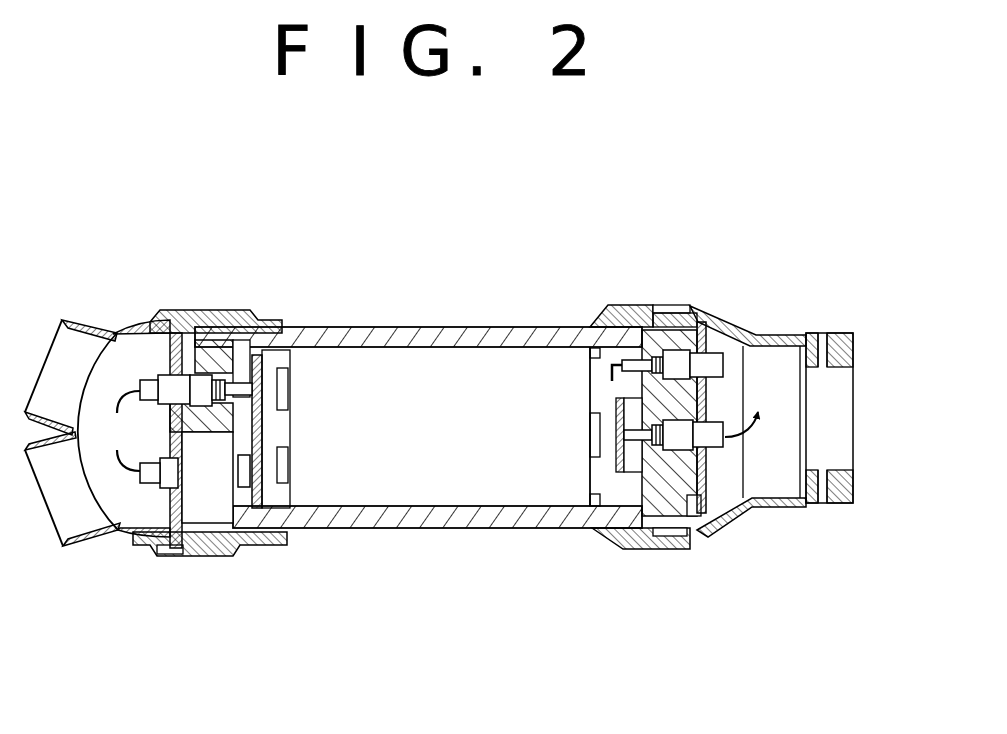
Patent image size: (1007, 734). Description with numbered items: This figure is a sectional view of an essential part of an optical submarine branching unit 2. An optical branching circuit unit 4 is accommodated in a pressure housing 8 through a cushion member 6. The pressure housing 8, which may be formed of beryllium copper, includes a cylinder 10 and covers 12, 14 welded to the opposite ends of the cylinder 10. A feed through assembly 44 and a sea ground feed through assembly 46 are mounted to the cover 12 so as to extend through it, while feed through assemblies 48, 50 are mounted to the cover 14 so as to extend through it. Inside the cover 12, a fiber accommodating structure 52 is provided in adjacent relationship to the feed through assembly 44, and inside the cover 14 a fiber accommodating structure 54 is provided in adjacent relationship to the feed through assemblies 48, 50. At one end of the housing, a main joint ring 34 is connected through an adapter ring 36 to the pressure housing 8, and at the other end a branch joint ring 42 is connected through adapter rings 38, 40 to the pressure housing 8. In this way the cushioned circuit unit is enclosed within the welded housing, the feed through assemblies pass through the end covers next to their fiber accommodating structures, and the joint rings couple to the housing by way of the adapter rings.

The optical submarine branching unit 2 is at (441, 313).
The optical branching circuit unit 4 is at (458, 462).
The cushion member 6 is at (388, 512).
The pressure housing 8 is at (418, 415).
The cylinder 10 is at (353, 333).
The cover 12 is at (655, 337).
The cover 14 is at (213, 350).
The main joint ring 34 is at (727, 323).
The adapter ring 36 is at (607, 310).
The adapter ring 38 is at (264, 545).
The adapter ring 40 is at (196, 548).
The branch joint ring 42 is at (117, 333).
The feed through assembly 44 is at (708, 443).
The sea ground feed through assembly 46 is at (677, 362).
The feed through assembly 48 is at (173, 383).
The feed through assembly 50 is at (163, 478).
The fiber accommodating structure 52 is at (617, 458).
The fiber accommodating structure 54 is at (265, 468).